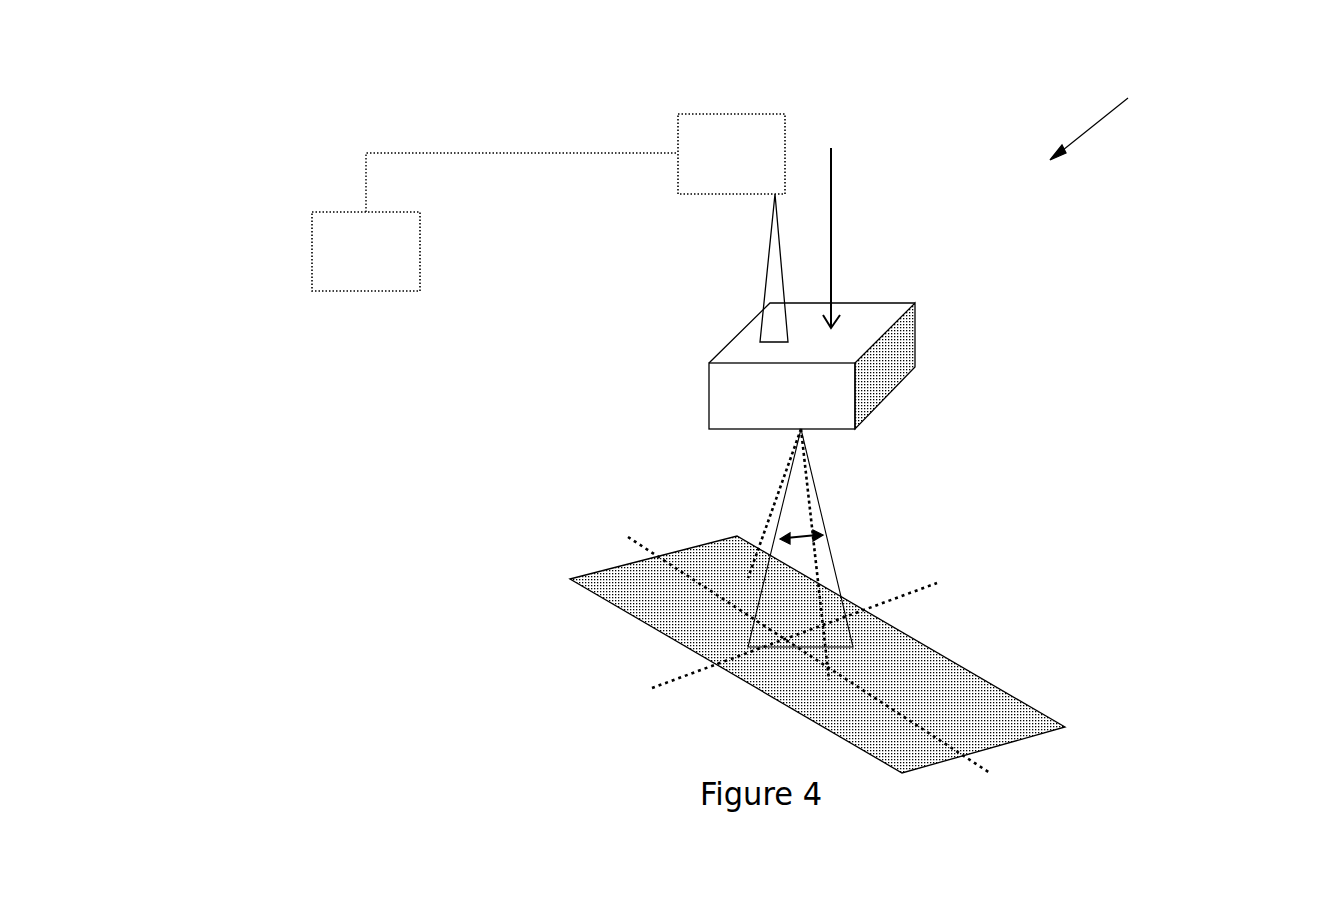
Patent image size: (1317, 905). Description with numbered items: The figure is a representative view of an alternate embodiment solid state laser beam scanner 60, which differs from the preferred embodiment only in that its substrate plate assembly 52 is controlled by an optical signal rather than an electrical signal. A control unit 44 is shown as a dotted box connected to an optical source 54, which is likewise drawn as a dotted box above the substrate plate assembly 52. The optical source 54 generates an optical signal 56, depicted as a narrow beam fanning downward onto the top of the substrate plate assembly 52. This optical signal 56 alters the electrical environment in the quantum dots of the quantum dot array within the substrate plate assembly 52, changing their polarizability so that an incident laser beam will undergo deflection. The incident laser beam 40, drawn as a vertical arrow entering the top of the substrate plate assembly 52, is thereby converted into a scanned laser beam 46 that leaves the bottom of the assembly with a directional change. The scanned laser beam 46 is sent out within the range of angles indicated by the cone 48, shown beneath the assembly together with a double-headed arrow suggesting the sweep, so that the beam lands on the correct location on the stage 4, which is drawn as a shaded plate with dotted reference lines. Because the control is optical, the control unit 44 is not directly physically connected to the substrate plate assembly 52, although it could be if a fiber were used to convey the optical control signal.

The stage 4 is at (950, 685).
The laser beam 40 is at (832, 207).
The control unit 44 is at (347, 256).
The scanned laser beam 46 is at (763, 518).
The cone 48 is at (823, 525).
The substrate plate assembly 52 is at (878, 405).
The optical source 54 is at (677, 134).
The optical signal 56 is at (760, 247).
The alternate embodiment solid state laser beam scanner 60 is at (1110, 114).